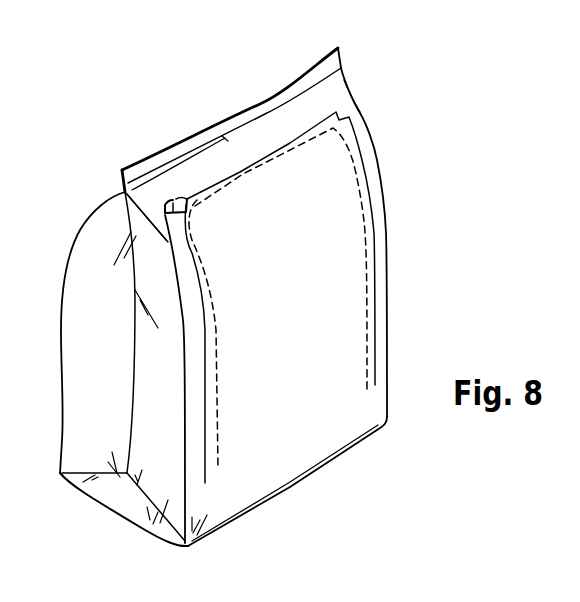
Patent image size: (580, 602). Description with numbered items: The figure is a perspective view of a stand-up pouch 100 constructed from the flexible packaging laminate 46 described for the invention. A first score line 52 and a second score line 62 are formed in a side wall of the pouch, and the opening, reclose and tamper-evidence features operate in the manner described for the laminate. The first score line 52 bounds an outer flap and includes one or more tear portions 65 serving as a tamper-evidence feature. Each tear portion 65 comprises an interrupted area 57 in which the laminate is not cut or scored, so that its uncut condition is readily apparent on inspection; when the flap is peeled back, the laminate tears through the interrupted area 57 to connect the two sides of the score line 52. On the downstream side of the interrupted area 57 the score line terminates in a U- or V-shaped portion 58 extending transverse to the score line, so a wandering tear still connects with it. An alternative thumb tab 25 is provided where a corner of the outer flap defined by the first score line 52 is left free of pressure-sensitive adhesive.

The stand-up pouch 100 is at (422, 128).
The laminate 46 is at (339, 91).
The first score line 52 is at (375, 237).
The second score line 62 is at (365, 275).
The interrupted area 57 is at (162, 210).
The U- or V-shaped portion 58 is at (178, 211).
The thumb tab 25 is at (180, 199).
The tear portion 65 is at (153, 223).